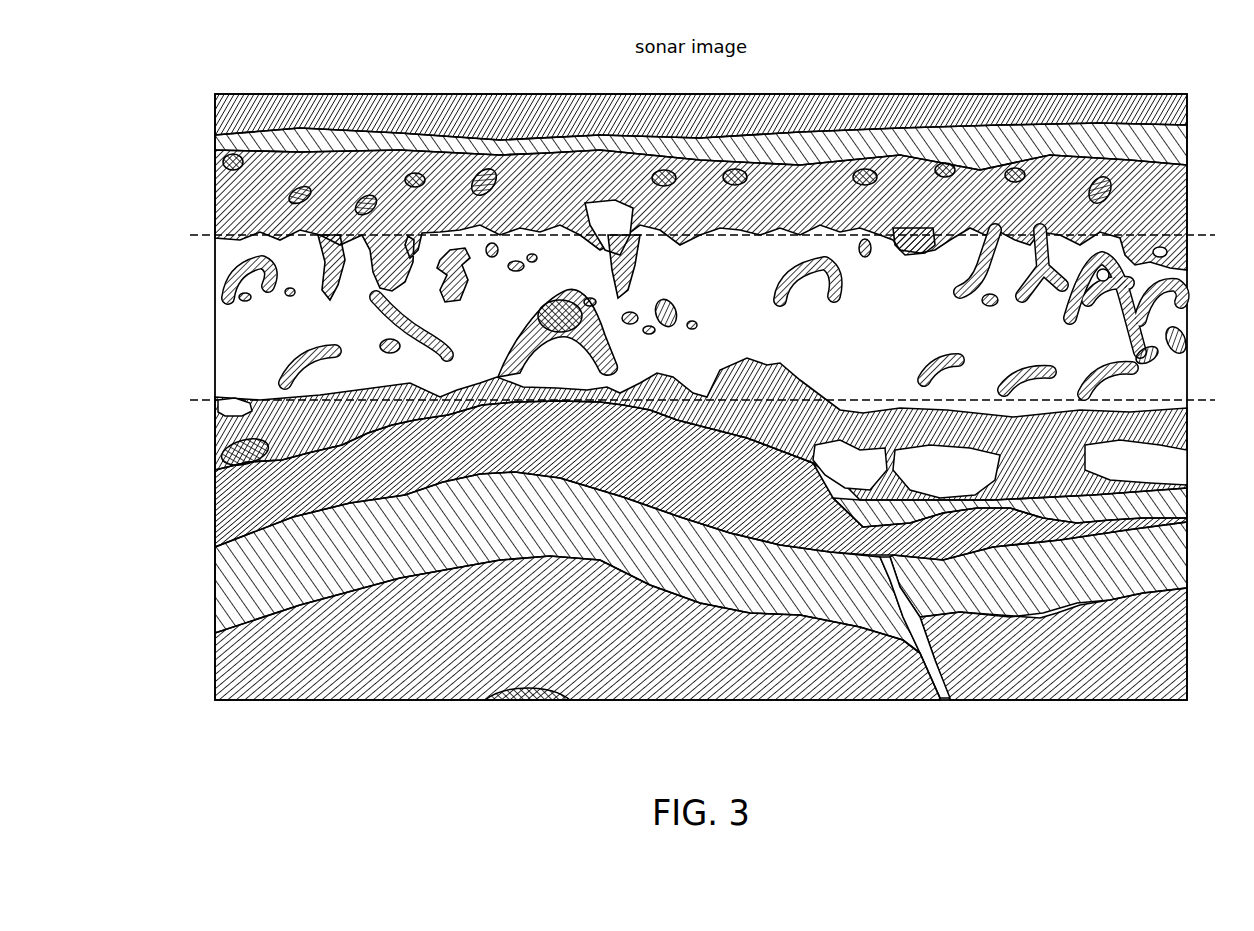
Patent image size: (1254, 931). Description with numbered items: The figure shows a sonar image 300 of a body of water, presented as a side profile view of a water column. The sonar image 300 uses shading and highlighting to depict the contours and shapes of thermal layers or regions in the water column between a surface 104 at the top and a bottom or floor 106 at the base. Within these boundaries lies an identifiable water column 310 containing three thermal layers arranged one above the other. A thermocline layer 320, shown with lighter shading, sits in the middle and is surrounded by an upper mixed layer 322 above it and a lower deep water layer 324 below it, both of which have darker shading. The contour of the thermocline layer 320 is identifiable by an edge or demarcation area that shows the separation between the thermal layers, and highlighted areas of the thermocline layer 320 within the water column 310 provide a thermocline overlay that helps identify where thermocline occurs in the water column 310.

The sonar image 300 is at (173, 76).
The surface 104 is at (315, 88).
The water column 310 is at (477, 120).
The upper mixed layer 322 is at (366, 169).
The thermocline layer 320 is at (190, 235).
The lower deep water layer 324 is at (397, 627).
The bottom or floor 106 is at (272, 710).